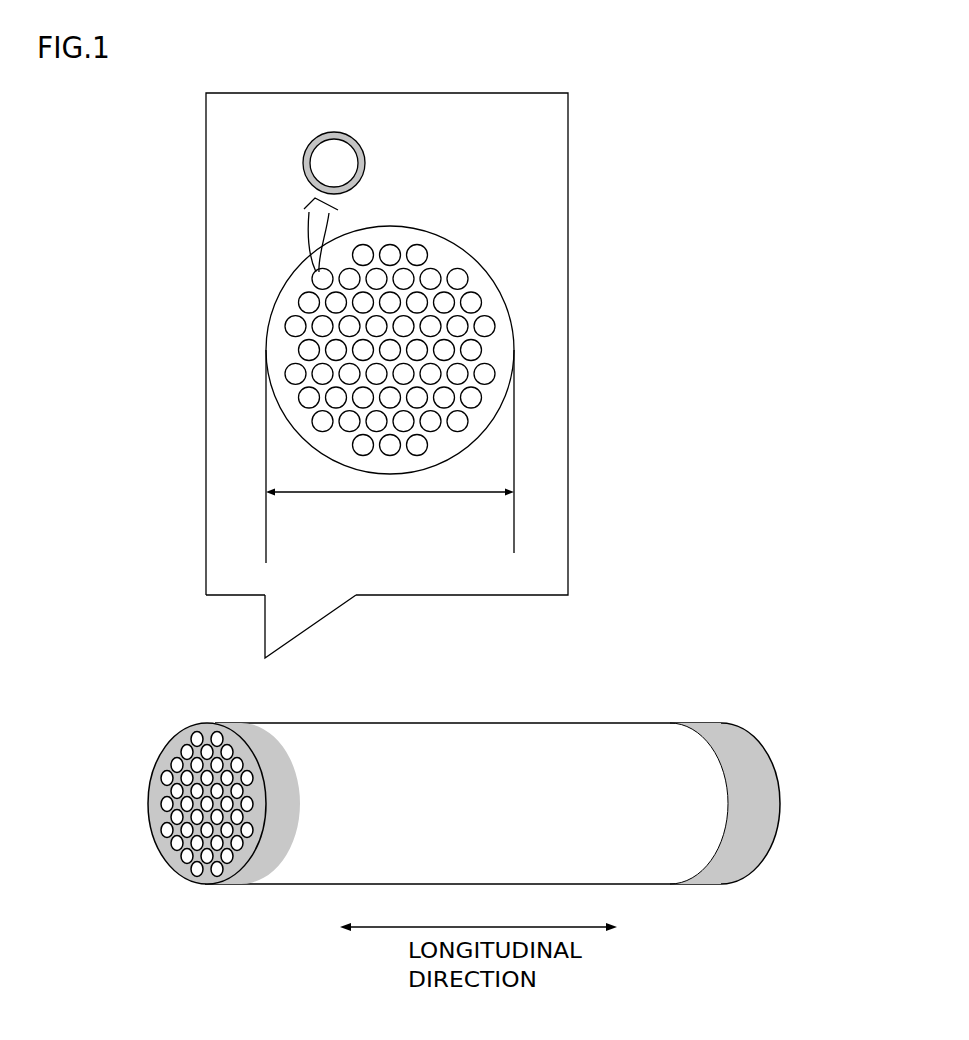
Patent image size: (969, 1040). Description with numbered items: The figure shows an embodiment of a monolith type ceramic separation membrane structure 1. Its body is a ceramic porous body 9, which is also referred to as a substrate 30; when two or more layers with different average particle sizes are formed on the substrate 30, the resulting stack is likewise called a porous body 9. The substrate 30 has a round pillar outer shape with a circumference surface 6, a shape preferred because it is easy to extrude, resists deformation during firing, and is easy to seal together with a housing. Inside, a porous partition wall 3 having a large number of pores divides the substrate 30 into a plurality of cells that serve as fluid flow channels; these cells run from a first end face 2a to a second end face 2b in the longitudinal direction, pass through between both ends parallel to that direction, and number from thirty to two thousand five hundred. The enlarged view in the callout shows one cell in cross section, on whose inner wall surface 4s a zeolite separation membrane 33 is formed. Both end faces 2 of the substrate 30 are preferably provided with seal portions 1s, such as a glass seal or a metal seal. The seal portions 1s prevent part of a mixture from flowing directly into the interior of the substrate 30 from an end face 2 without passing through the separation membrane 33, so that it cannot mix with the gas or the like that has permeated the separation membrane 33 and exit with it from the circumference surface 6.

The ceramic separation membrane structure 1 is at (473, 804).
The seal portion 1s is at (213, 885).
The end face 2 is at (473, 781).
The first end face 2a is at (182, 731).
The second end face 2b is at (769, 756).
The partition wall 3 is at (300, 319).
The inner wall surface 4s is at (312, 137).
The circumference surface 6 is at (658, 866).
The ceramic porous body 9 is at (553, 742).
The substrate 30 is at (449, 256).
The zeolite separation membrane 33 is at (366, 165).